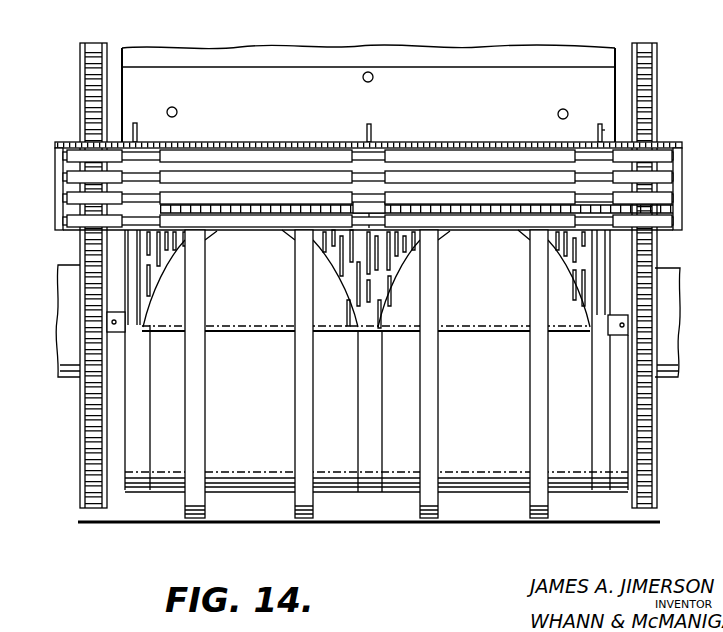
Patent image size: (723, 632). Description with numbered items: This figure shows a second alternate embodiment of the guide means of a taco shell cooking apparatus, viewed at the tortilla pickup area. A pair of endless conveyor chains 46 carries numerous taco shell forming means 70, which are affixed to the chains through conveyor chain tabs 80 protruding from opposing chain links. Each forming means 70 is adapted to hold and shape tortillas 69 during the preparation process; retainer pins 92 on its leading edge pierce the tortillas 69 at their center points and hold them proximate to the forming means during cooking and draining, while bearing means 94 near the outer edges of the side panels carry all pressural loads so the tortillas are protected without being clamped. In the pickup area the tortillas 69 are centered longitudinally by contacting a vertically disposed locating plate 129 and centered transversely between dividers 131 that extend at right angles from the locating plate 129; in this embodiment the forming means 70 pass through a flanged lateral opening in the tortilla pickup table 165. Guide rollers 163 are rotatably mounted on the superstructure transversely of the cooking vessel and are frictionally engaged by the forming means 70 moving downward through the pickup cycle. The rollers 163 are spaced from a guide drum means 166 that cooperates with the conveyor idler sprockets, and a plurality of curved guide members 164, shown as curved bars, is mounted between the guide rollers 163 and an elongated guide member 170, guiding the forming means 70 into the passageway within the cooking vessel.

The conveyor chain 46 is at (80, 52).
The tortilla 69 is at (240, 308).
The taco shell forming means 70 is at (578, 250).
The conveyor chain tab 80 is at (123, 330).
The retainer pin 92 is at (480, 330).
The bearing means 94 is at (130, 255).
The locating plate 129 is at (466, 80).
The divider 131 is at (137, 128).
The guide roller 163 is at (260, 181).
The curved guide member 164 is at (200, 410).
The tortilla pickup table 165 is at (455, 142).
The guide drum means 166 is at (167, 483).
The guide member 170 is at (460, 523).